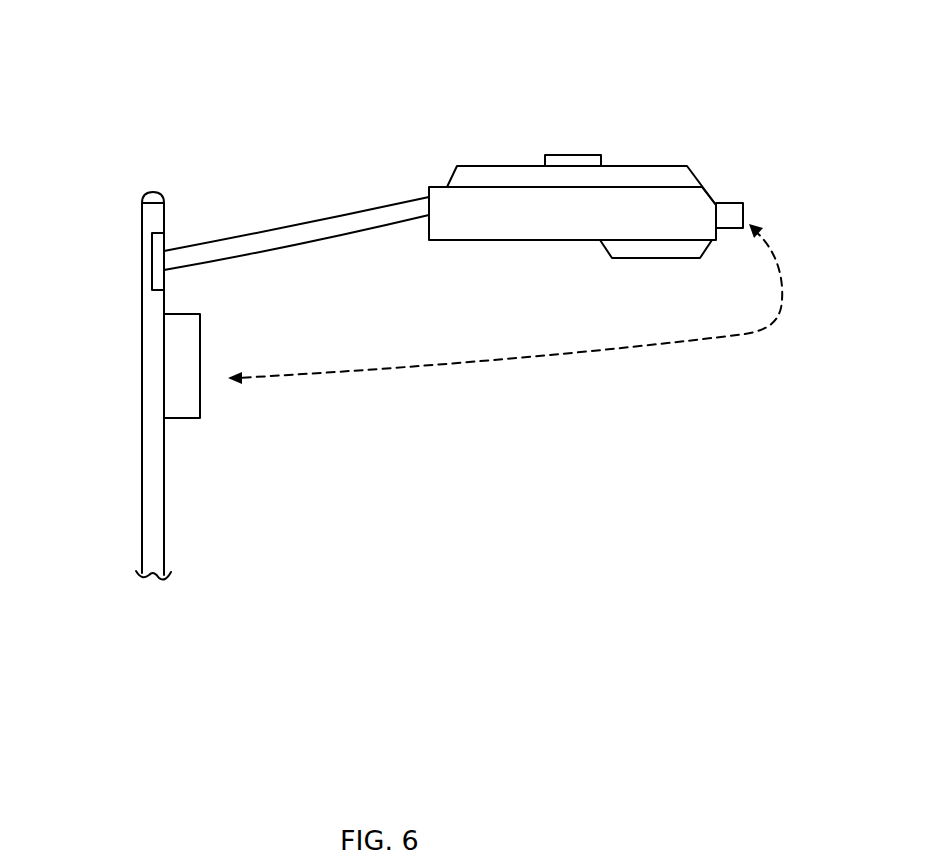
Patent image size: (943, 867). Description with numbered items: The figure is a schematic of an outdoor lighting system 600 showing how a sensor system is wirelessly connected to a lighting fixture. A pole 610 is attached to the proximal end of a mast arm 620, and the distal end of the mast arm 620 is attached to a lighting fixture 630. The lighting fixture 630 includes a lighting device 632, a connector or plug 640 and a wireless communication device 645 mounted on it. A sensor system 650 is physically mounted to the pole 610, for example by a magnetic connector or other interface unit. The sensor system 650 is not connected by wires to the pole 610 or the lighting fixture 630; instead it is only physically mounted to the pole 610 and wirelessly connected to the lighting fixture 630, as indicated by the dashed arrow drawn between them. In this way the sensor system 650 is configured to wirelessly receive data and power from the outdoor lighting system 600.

The outdoor lighting system 600 is at (258, 88).
The pole 610 is at (141, 270).
The mast arm 620 is at (263, 220).
The lighting fixture 630 is at (692, 180).
The lighting device 632 is at (635, 233).
The connector or plug 640 is at (568, 155).
The wireless communication device 645 is at (743, 215).
The sensor system 650 is at (200, 365).